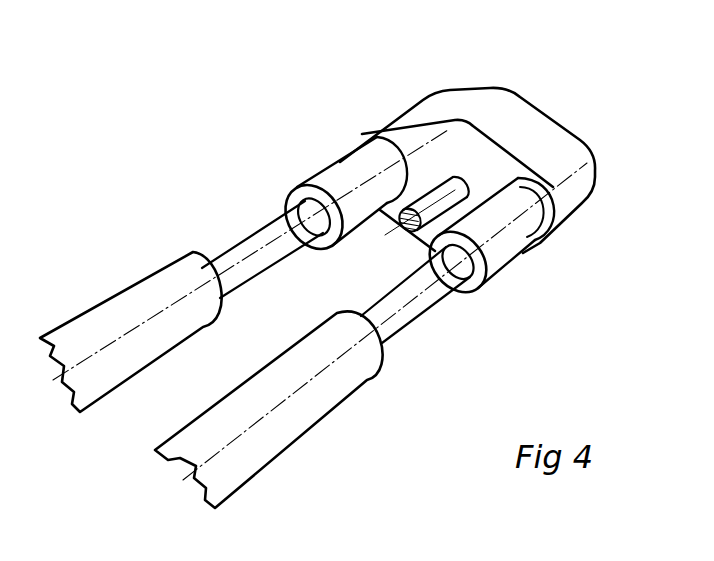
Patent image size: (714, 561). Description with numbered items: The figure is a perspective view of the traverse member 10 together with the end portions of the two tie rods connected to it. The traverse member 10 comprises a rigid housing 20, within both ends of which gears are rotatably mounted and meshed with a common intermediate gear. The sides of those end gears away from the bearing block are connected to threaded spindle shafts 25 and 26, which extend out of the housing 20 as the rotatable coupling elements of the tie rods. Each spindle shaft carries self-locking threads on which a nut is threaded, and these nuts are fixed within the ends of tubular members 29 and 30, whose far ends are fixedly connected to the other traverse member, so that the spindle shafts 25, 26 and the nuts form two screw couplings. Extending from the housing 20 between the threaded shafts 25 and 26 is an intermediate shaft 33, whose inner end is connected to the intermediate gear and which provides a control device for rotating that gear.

The traverse member 10 is at (545, 94).
The rigid housing 20 is at (563, 160).
The intermediate shaft 33 is at (427, 184).
The threaded spindle shaft 26 is at (253, 243).
The threaded spindle shaft 25 is at (438, 287).
The tubular member 30 is at (150, 300).
The tubular member 29 is at (288, 410).